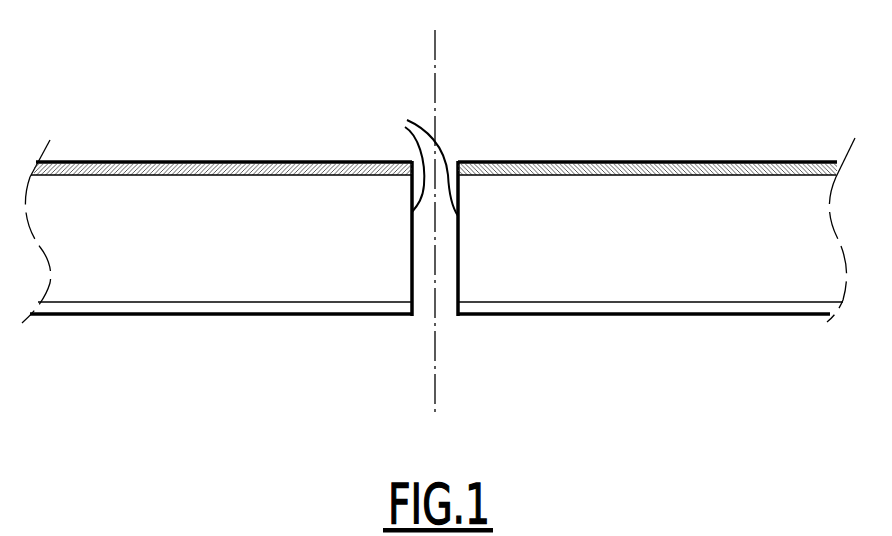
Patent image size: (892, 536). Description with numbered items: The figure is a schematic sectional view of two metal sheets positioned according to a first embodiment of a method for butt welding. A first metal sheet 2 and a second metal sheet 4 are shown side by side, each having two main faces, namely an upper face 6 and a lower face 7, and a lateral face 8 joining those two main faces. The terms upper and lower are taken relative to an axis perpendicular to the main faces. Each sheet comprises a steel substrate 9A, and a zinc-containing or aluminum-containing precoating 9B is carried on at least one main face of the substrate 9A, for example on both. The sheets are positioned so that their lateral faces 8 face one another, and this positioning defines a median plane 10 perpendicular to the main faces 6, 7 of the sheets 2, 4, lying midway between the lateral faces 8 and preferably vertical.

The first metal sheet 2 is at (176, 147).
The second metal sheet 4 is at (732, 137).
The upper face 6 is at (253, 162).
The lower face 7 is at (270, 318).
The lateral face 8 is at (422, 159).
The steel substrate 9A is at (108, 262).
The precoating 9B is at (98, 168).
The median plane 10 is at (437, 53).